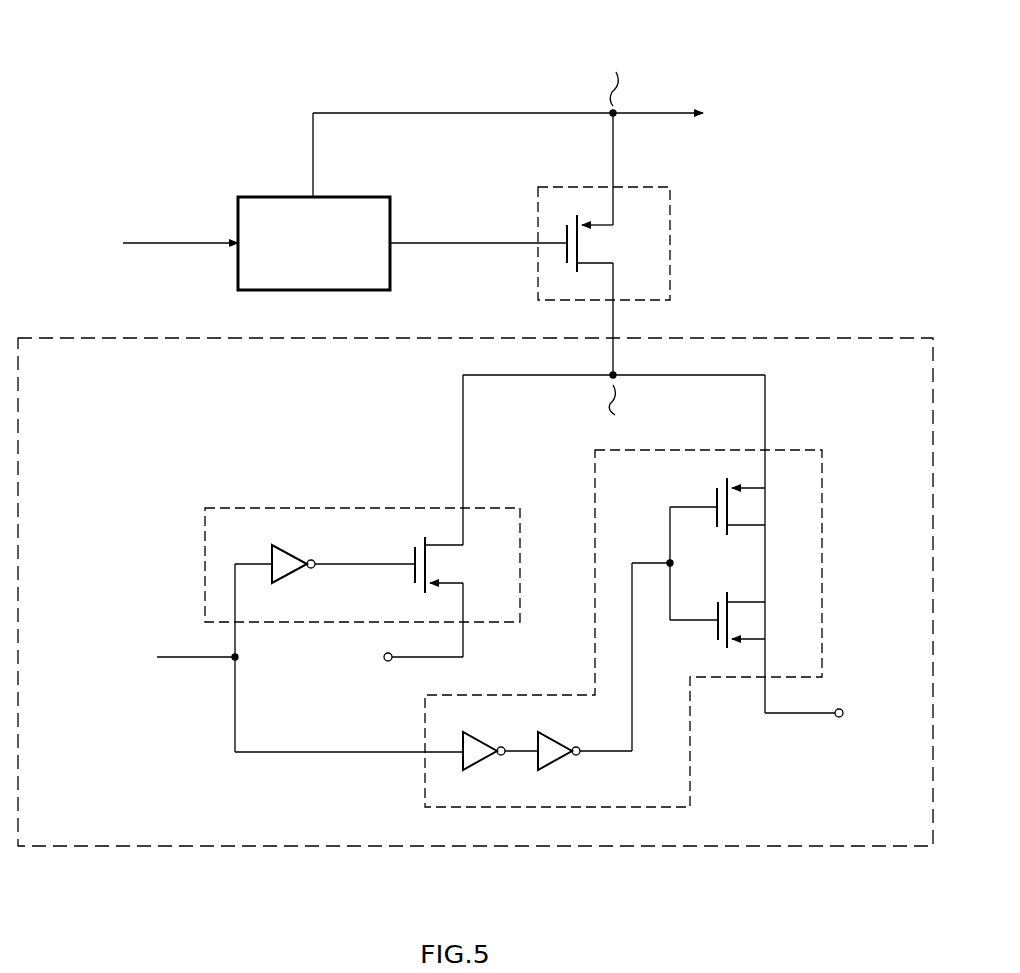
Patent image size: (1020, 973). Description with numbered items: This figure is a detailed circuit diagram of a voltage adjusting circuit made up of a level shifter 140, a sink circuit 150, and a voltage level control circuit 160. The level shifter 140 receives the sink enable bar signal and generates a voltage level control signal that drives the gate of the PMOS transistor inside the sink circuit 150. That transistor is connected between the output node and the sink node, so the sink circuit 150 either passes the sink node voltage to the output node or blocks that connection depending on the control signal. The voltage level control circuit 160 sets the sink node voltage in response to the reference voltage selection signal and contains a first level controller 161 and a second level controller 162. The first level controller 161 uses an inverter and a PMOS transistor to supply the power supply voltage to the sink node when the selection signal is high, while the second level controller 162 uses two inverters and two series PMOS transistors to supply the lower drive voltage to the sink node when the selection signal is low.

The level shifter 140 is at (255, 197).
The sink circuit 150 is at (670, 241).
The voltage level control circuit 160 is at (90, 338).
The first level controller 161 is at (360, 507).
The second level controller 162 is at (822, 563).